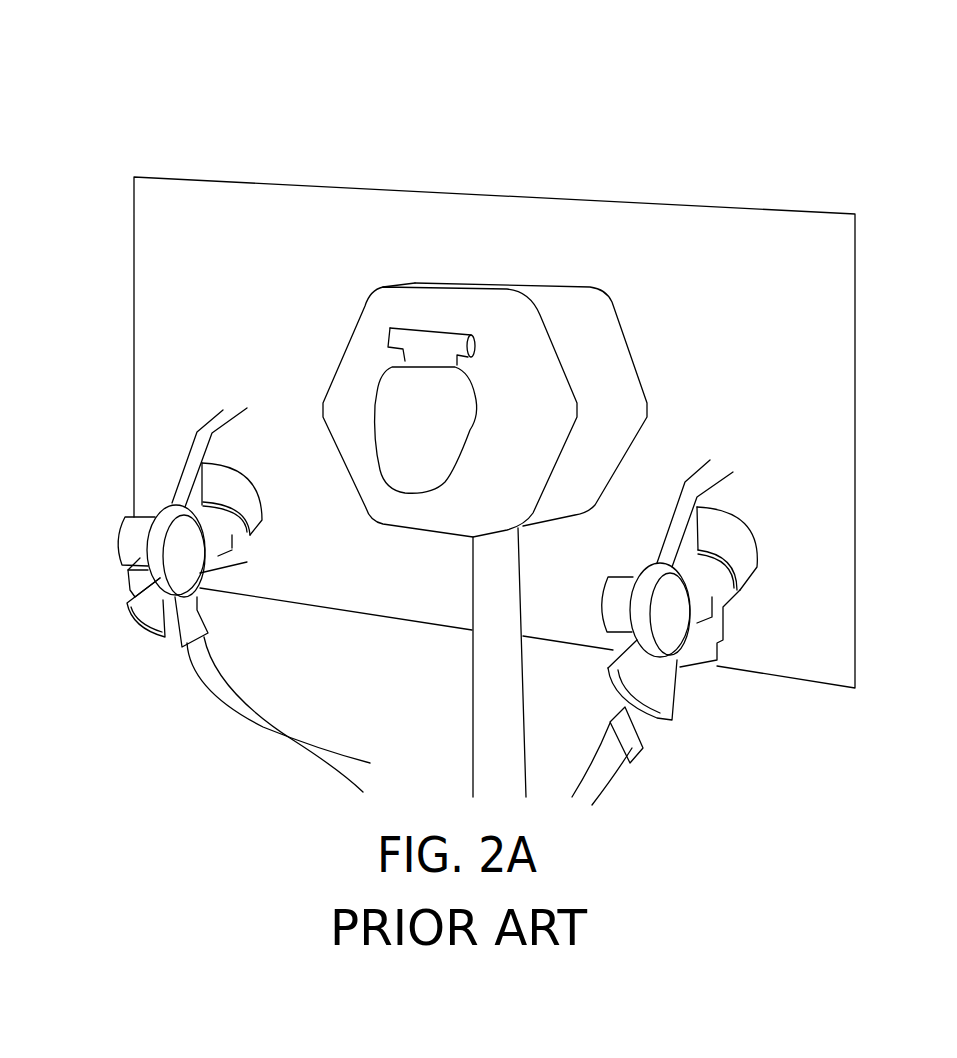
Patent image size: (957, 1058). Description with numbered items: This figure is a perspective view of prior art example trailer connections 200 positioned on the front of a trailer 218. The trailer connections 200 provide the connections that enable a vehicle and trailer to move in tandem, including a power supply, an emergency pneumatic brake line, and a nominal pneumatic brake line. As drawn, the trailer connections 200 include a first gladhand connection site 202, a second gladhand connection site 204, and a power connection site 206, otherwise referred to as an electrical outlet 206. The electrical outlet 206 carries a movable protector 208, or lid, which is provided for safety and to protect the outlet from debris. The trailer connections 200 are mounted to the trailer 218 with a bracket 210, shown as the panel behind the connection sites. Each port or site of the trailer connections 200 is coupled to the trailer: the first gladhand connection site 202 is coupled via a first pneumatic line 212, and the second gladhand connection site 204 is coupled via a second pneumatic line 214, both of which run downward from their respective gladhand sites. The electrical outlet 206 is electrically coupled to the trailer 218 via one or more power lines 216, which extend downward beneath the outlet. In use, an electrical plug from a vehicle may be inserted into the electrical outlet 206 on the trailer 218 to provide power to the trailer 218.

The trailer connections 200 is at (331, 106).
The first gladhand connection site 202 is at (783, 540).
The second gladhand connection site 204 is at (275, 577).
The power connection site 206 is at (353, 320).
The movable protector 208 is at (373, 408).
The bracket 210 is at (636, 203).
The first pneumatic line 212 is at (613, 770).
The second pneumatic line 214 is at (247, 717).
The power lines 216 is at (475, 693).
The trailer 218 is at (541, 143).